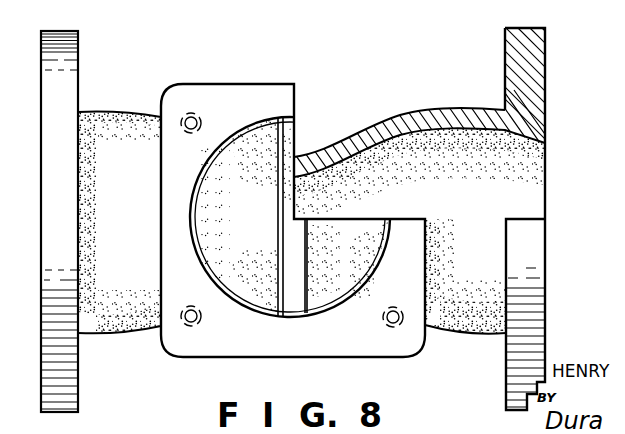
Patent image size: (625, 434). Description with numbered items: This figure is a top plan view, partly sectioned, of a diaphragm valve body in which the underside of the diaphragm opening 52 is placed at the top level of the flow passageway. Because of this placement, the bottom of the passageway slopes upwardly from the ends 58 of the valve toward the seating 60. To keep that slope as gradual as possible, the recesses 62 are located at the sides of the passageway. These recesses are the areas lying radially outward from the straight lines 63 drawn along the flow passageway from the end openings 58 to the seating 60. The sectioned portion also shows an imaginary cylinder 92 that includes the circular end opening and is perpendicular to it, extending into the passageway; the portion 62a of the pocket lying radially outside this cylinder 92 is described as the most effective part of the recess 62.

The diaphragm opening 52 is at (388, 222).
The end 58 is at (545, 200).
The seating 60 is at (268, 256).
The recess 62 is at (348, 156).
The portion of the pocket 62a is at (462, 130).
The straight line 63 is at (434, 160).
The imaginary cylinder 92 is at (517, 130).